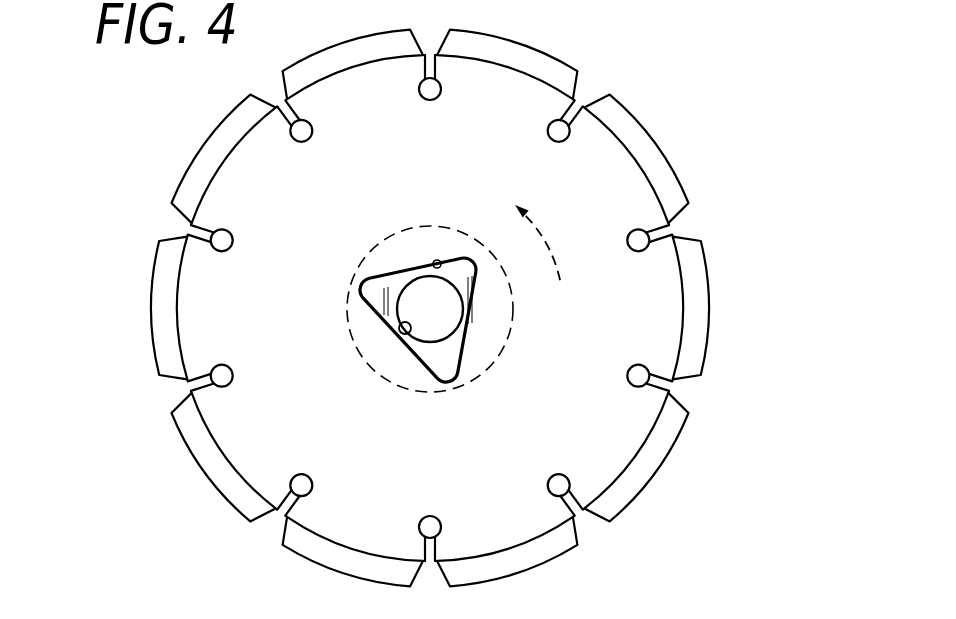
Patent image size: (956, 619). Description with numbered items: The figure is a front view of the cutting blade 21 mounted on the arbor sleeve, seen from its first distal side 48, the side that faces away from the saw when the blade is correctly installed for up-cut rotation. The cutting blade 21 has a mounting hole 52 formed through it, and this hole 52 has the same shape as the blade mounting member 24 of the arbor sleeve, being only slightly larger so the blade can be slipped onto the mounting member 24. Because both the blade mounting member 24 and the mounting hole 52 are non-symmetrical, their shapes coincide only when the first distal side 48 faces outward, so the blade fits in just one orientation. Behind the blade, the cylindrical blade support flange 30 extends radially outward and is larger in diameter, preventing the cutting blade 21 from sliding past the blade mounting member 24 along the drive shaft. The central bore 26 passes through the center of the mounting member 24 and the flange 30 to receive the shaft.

The cutting blade 21 is at (495, 308).
The blade mounting member 24 is at (455, 355).
The central bore 26 is at (404, 333).
The blade support flange 30 is at (505, 345).
The first distal side 48 is at (630, 187).
The mounting hole 52 is at (440, 262).